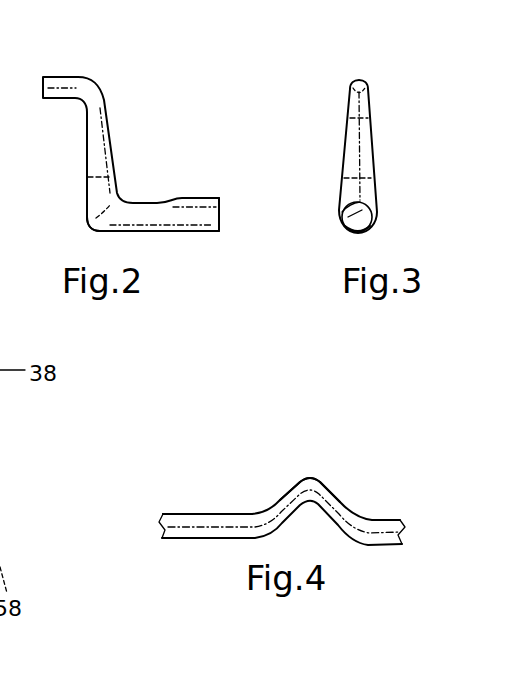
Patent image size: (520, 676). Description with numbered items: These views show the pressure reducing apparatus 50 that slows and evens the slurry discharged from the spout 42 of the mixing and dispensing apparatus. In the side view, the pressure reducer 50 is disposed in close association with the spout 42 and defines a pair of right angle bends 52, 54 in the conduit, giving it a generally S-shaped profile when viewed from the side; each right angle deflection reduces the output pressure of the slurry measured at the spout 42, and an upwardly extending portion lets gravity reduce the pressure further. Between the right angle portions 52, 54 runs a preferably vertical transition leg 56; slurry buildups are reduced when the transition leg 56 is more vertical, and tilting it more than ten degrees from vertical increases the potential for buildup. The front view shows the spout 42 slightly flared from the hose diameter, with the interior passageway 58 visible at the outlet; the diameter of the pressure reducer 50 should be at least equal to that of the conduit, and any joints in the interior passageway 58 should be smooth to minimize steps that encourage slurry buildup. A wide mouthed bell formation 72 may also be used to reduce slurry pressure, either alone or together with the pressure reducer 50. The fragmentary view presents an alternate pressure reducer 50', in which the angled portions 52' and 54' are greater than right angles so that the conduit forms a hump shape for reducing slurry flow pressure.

In FIG. 2, the pressure reducing apparatus 50 is at (134, 126).
In FIG. 3, the pressure reducing apparatus 50 is at (411, 142).
In FIG. 2, the right angle bend 52 is at (45, 56).
In FIG. 3, the right angle bend 52 is at (344, 62).
In FIG. 2, the right angle bend 54 is at (65, 238).
In FIG. 3, the right angle bend 54 is at (385, 214).
In FIG. 2, the transition leg 56 is at (97, 142).
In FIG. 3, the transition leg 56 is at (362, 146).
In FIG. 2, the interior passageway 58 is at (187, 220).
In FIG. 3, the interior passageway 58 is at (354, 215).
In FIG. 2, the wide mouthed bell formation 72 is at (182, 198).
In FIG. 3, the wide mouthed bell formation 72 is at (355, 204).
In FIG. 2, the spout 42 is at (220, 213).
In FIG. 3, the spout 42 is at (362, 233).
In FIG. 4, the alternate pressure reducer 50' is at (311, 464).
In FIG. 4, the angled portion 52' is at (213, 484).
In FIG. 4, the angled portion 54' is at (316, 454).